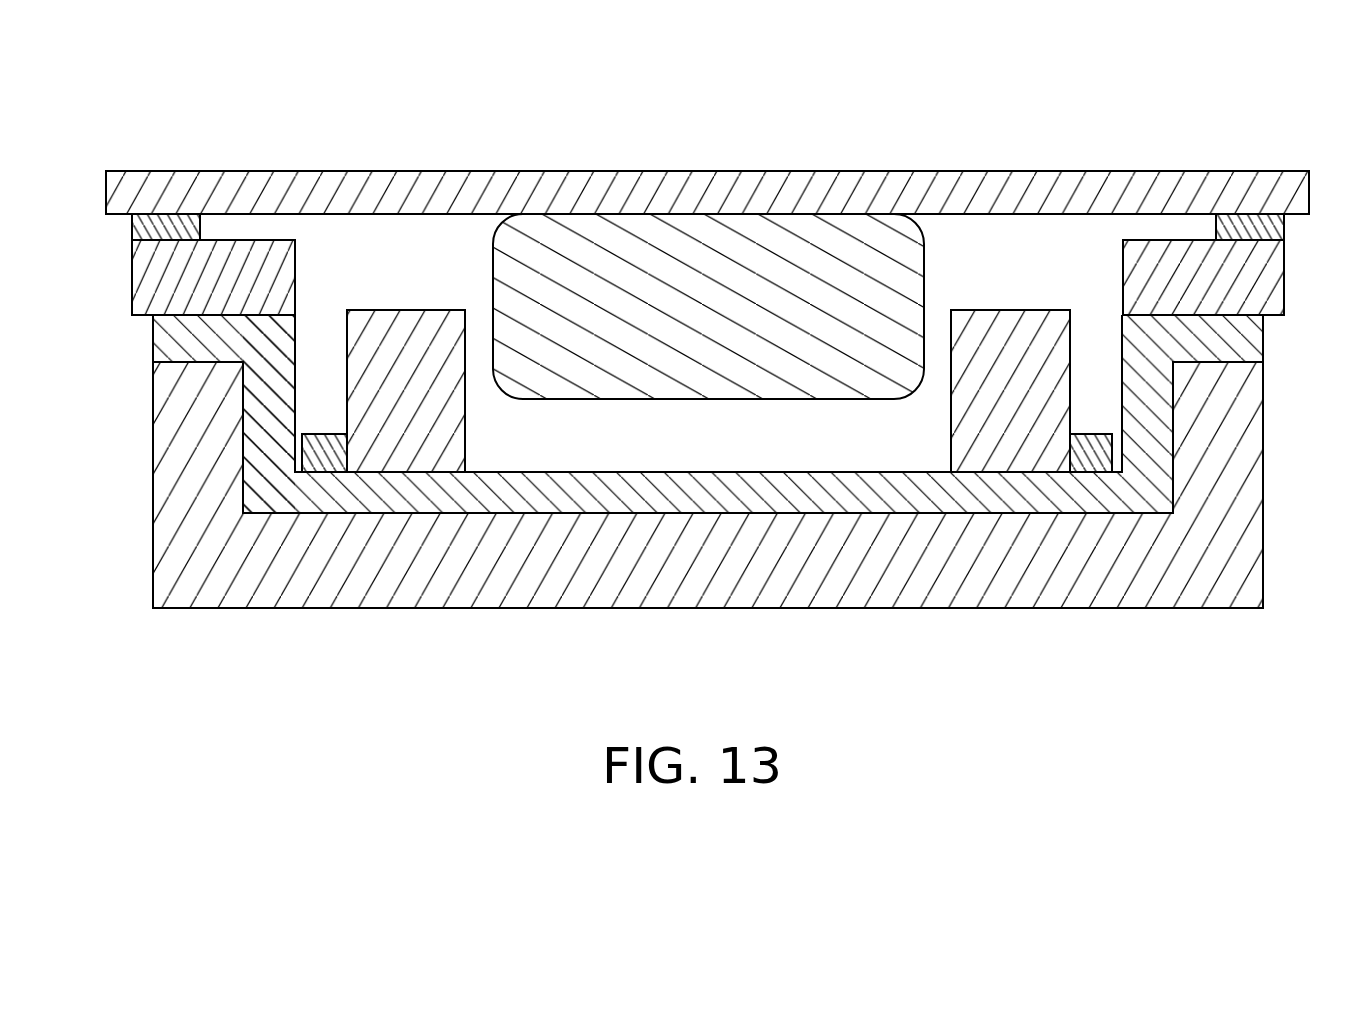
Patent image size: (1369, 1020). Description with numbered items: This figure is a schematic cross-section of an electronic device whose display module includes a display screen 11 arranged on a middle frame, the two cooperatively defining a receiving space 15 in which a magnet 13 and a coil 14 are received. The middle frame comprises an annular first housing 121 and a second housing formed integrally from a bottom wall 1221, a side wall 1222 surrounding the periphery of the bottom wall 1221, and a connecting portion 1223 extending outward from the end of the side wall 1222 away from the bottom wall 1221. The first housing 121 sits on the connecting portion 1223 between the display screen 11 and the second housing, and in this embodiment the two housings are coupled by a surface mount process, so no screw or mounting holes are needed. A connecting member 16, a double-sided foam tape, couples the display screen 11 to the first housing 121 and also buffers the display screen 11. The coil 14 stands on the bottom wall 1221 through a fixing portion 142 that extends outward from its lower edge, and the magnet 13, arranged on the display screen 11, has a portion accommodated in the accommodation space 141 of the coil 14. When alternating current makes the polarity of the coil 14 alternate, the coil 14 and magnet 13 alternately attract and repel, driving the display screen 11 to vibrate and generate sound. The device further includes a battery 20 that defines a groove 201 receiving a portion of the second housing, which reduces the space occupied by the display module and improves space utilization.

The display screen 11 is at (322, 197).
The magnet 13 is at (643, 248).
The receiving space 15 is at (1035, 258).
The connecting member 16 is at (1247, 226).
The first housing 121 is at (155, 277).
The connecting portion 1223 is at (168, 347).
The side wall 1222 is at (273, 440).
The bottom wall 1221 is at (327, 500).
The battery 20 is at (187, 487).
The groove 201 is at (1175, 493).
The coil 14 is at (968, 447).
The fixing portion 142 is at (1097, 457).
The accommodation space 141 is at (627, 435).